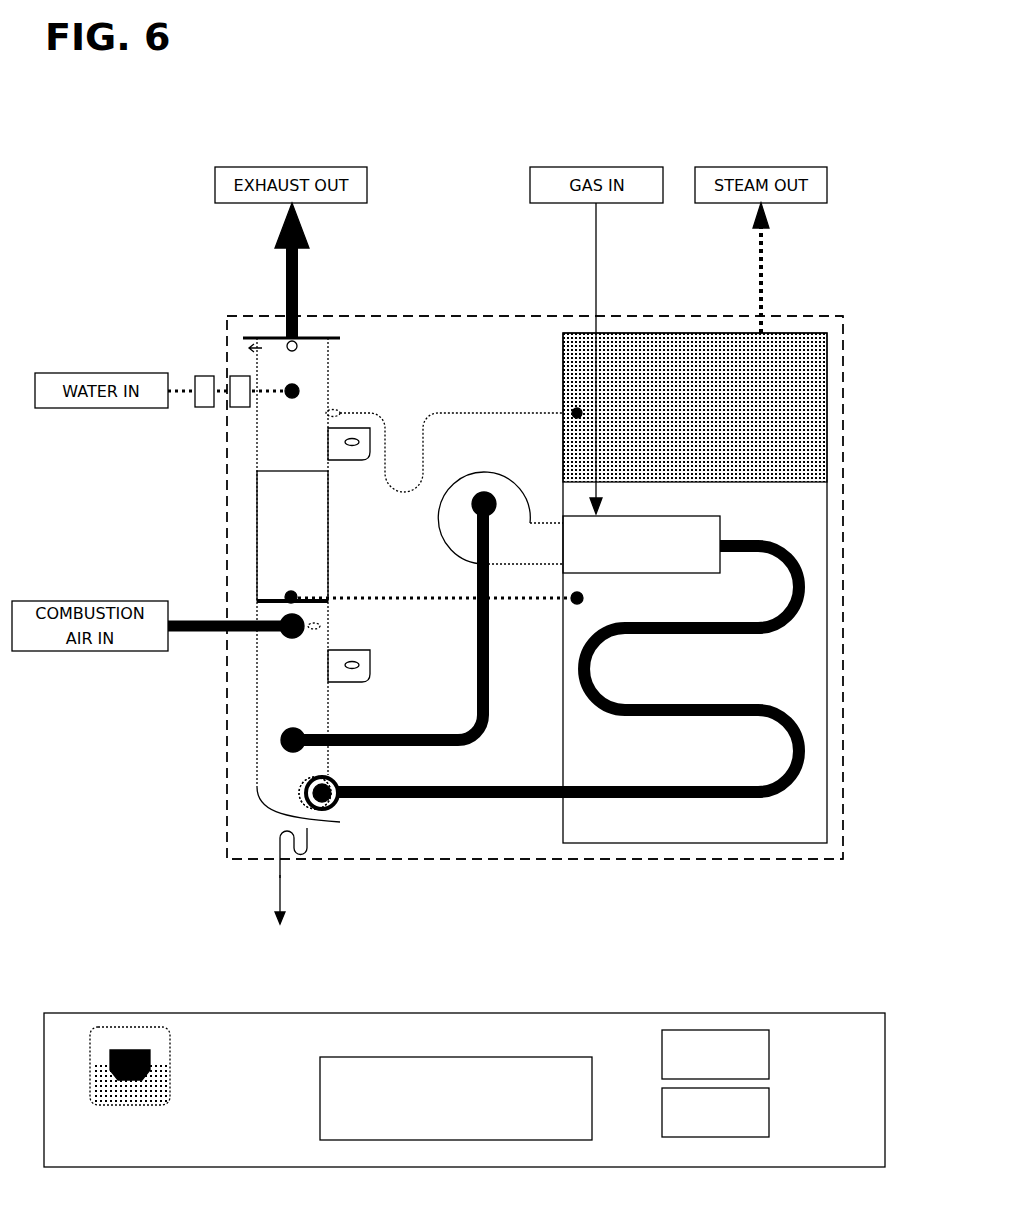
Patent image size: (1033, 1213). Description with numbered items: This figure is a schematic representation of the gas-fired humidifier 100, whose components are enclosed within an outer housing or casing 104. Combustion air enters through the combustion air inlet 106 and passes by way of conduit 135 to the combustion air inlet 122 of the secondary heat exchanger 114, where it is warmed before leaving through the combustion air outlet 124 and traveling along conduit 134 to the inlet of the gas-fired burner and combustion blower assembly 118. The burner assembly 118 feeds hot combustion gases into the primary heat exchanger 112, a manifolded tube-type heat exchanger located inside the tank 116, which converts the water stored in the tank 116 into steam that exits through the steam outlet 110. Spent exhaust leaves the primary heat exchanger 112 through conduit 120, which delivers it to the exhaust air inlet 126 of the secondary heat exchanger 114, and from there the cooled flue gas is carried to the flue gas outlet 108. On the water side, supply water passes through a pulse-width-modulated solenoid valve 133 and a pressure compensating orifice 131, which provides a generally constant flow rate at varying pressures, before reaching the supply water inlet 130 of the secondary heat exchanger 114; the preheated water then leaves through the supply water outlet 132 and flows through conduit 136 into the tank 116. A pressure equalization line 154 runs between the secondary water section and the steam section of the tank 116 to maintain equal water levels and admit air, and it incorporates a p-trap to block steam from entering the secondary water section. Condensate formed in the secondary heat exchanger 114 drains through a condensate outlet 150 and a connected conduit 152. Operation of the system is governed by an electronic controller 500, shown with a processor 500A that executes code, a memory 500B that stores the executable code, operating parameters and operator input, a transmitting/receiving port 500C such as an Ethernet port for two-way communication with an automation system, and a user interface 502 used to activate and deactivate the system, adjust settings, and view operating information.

The gas-fired humidifier 100 is at (166, 241).
The outer housing 104 is at (845, 800).
The combustion air inlet 106 is at (218, 632).
The flue gas outlet 108 is at (298, 318).
The steam outlet 110 is at (762, 316).
The primary heat exchanger 112 is at (766, 704).
The secondary heat exchanger 114 is at (256, 528).
The tank 116 is at (813, 640).
The gas-fired burner and combustion blower assembly 118 is at (641, 544).
The conduit 120 is at (550, 800).
The combustion air inlet 122 is at (256, 603).
The combustion air outlet 124 is at (280, 740).
The exhaust air inlet 126 is at (306, 797).
The supply water inlet 130 is at (285, 395).
The pressure compensating orifice 131 is at (237, 375).
The supply water outlet 132 is at (256, 578).
The solenoid valve 133 is at (201, 375).
The conduit 134 is at (330, 736).
The conduit 135 is at (232, 621).
The conduit 136 is at (440, 597).
The condensate outlet 150 is at (310, 835).
The conduit 152 is at (282, 878).
The pressure equalization line 154 is at (465, 412).
The electronic controller 500 is at (435, 1012).
The processor 500A is at (662, 1060).
The memory 500B is at (662, 1112).
The transmitting/receiving port 500C is at (160, 1105).
The user interface 502 is at (320, 1113).